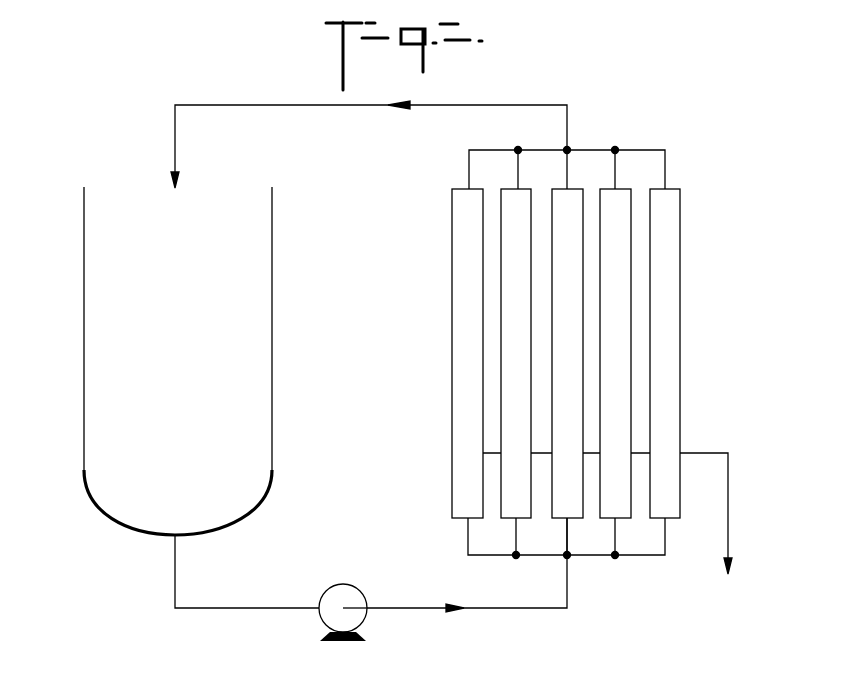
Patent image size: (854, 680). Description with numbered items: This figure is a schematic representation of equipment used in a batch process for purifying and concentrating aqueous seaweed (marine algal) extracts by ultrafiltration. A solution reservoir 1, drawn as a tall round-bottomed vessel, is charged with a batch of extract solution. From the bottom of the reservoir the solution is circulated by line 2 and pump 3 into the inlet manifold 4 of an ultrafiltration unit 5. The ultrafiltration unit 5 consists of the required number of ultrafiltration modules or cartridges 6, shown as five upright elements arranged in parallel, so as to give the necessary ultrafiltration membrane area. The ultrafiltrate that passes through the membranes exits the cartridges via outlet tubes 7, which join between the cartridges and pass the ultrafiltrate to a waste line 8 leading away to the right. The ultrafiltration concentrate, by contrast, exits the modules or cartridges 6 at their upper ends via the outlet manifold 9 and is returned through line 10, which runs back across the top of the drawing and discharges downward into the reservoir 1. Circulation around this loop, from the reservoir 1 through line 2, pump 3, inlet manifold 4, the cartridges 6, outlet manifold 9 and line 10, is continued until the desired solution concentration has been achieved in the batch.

The solution reservoir 1 is at (82, 392).
The line 2 is at (413, 610).
The pump 3 is at (349, 586).
The inlet manifold 4 is at (588, 557).
The ultrafiltration unit 5 is at (594, 353).
The ultrafiltration modules or cartridges 6 is at (680, 210).
The outlet tubes 7 is at (488, 453).
The waste line 8 is at (731, 482).
The outlet manifold 9 is at (590, 150).
The line 10 is at (333, 105).